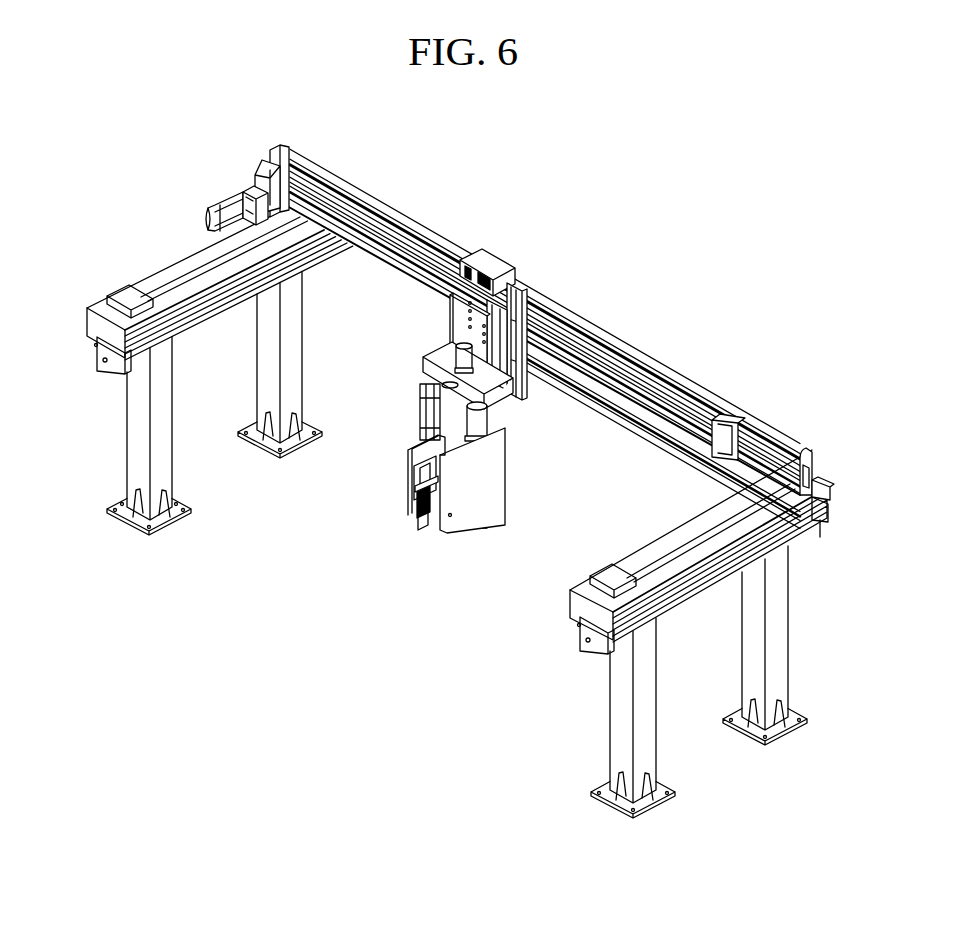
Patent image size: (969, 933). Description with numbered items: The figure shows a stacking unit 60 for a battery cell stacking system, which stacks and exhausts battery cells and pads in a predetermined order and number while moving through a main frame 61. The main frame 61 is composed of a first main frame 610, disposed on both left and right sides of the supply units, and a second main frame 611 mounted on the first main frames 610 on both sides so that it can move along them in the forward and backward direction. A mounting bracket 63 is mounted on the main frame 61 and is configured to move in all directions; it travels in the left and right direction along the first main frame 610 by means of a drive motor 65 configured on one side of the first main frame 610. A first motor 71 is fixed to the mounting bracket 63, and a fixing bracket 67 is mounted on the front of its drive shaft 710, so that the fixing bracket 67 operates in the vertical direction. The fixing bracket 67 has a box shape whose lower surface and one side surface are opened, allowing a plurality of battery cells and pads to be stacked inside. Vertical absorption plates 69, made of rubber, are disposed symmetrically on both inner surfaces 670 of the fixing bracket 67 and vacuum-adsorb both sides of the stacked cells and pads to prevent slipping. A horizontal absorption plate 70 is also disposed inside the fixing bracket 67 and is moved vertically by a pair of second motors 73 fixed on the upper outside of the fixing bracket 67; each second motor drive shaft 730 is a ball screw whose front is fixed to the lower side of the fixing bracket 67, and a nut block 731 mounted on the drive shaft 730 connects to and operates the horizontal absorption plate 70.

The stacking unit 60 is at (474, 533).
The main frame 61 is at (474, 533).
The first main frame 610 is at (166, 280).
The second main frame 611 is at (637, 358).
The mounting bracket 63 is at (482, 328).
The drive motor 65 is at (225, 207).
The fixing bracket 67 is at (452, 505).
The vertical absorption plate 69 is at (406, 505).
The horizontal absorption plate 70 is at (427, 513).
The first motor 71 is at (458, 350).
The drive shaft 710 is at (434, 402).
The second motor 73 is at (487, 416).
The second motor drive shaft 730 is at (487, 505).
The nut block 731 is at (492, 476).
The inner surfaces 670 is at (415, 484).